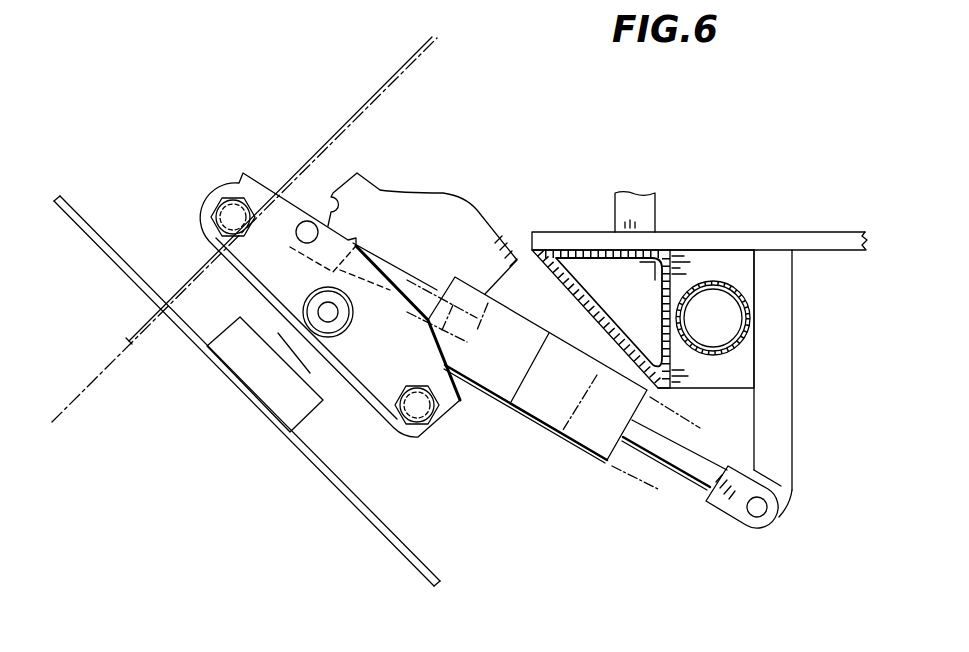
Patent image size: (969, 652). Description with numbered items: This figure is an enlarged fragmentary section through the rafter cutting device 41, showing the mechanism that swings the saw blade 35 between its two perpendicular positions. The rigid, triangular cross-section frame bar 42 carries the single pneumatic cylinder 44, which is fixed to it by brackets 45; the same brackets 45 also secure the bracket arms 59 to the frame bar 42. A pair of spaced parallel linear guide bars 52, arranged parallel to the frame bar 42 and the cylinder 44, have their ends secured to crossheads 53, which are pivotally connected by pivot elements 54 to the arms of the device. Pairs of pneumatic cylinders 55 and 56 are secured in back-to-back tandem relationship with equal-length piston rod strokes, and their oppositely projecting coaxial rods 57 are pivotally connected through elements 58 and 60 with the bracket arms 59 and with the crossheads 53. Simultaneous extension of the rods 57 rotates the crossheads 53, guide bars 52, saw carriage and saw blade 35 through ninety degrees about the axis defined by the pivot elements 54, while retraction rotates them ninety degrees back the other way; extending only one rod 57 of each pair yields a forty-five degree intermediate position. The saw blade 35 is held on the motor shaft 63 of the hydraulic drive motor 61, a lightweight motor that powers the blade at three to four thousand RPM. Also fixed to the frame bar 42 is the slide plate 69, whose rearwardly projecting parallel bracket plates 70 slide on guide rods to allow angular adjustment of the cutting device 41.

The saw blade 35 is at (130, 278).
The rafter cutting device 41 is at (645, 275).
The frame bar 42 is at (570, 257).
The pneumatic cylinder 44 is at (742, 297).
The brackets 45 is at (740, 367).
The guide bars 52 is at (210, 217).
The crossheads 53 is at (259, 186).
The pivot elements 54 is at (328, 312).
The pneumatic cylinder 55 is at (467, 293).
The pneumatic cylinder 56 is at (604, 462).
The rods 57 is at (483, 317).
The pivot element 58 is at (760, 512).
The bracket arms 59 is at (785, 463).
The pivot element 60 is at (310, 222).
The hydraulic drive motor 61 is at (420, 200).
The motor shaft 63 is at (282, 338).
The slide plate 69 is at (805, 243).
The bracket plates 70 is at (643, 197).